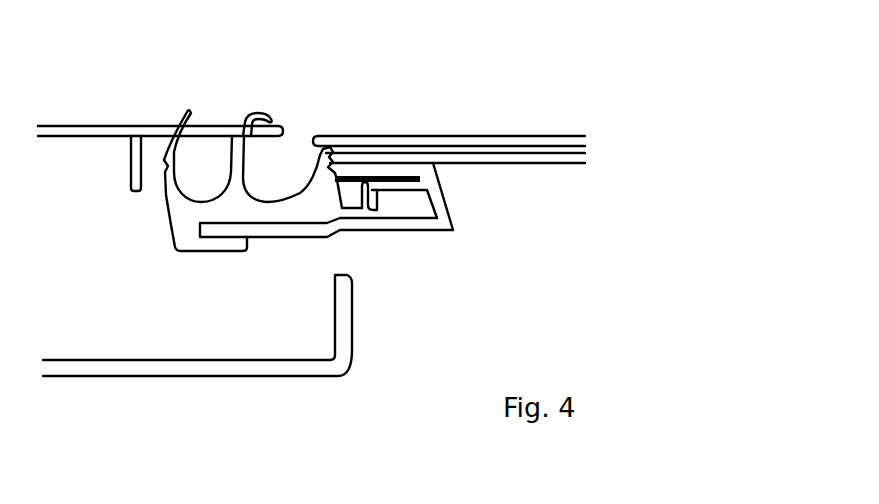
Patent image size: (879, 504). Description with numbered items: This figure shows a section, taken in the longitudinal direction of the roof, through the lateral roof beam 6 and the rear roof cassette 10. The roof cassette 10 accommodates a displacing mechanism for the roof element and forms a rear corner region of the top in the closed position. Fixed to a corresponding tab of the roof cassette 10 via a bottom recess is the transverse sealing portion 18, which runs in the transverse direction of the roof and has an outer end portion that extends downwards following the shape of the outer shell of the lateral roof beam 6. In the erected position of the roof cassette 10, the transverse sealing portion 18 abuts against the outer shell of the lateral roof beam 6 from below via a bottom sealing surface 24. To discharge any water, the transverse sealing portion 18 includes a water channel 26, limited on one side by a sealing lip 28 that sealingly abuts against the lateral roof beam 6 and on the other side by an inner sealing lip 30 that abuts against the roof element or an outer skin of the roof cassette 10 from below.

The lateral roof beam 6 is at (77, 126).
The roof cassette 10 is at (440, 136).
The transverse sealing portion 18 is at (167, 222).
The bottom sealing surface 24 is at (263, 112).
The water channel 26 is at (280, 198).
The sealing lip 28 is at (230, 138).
The inner sealing lip 30 is at (330, 150).